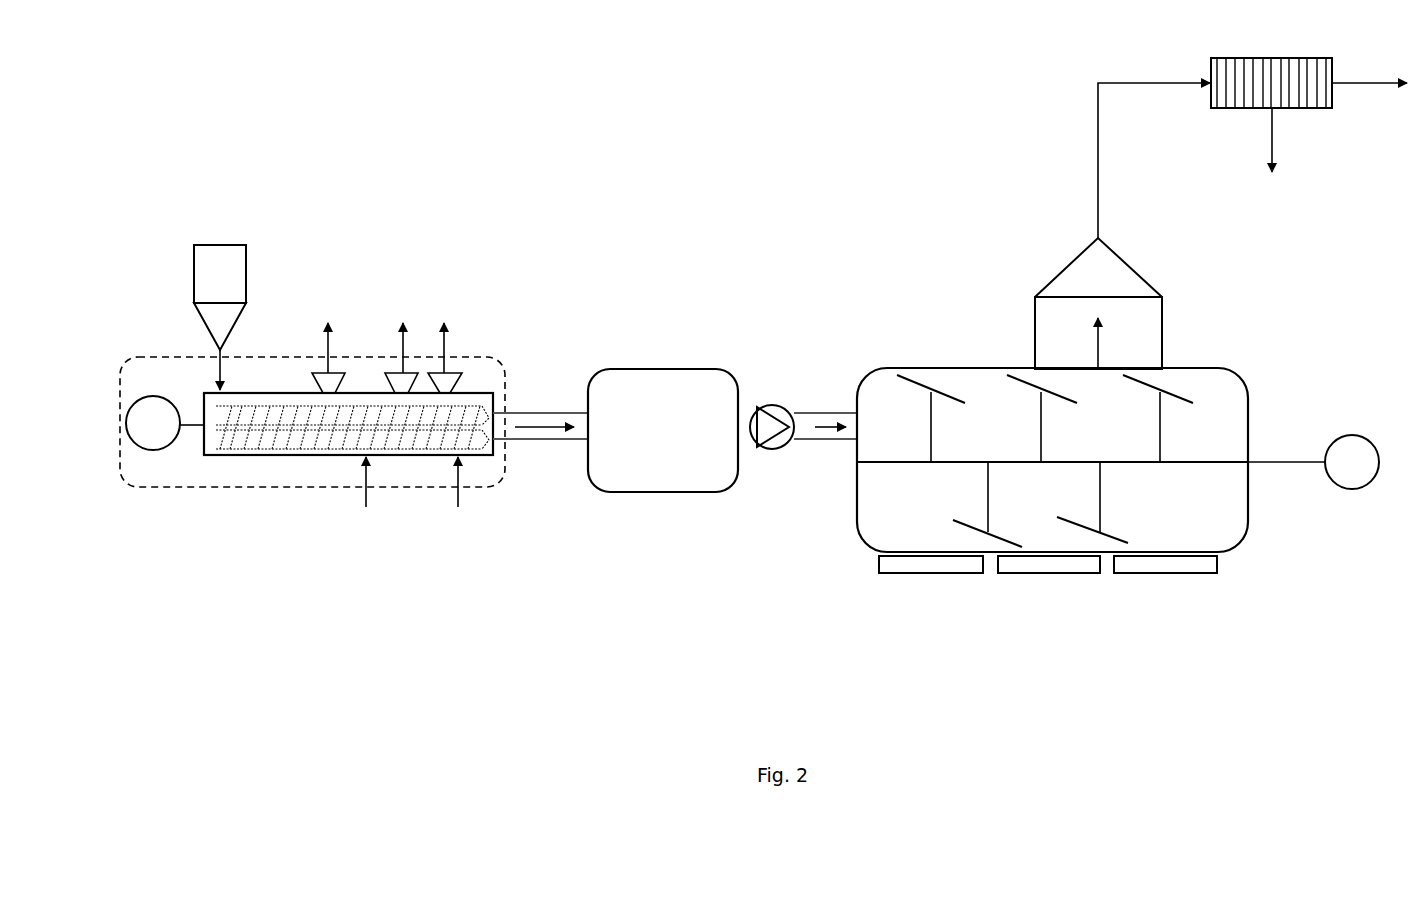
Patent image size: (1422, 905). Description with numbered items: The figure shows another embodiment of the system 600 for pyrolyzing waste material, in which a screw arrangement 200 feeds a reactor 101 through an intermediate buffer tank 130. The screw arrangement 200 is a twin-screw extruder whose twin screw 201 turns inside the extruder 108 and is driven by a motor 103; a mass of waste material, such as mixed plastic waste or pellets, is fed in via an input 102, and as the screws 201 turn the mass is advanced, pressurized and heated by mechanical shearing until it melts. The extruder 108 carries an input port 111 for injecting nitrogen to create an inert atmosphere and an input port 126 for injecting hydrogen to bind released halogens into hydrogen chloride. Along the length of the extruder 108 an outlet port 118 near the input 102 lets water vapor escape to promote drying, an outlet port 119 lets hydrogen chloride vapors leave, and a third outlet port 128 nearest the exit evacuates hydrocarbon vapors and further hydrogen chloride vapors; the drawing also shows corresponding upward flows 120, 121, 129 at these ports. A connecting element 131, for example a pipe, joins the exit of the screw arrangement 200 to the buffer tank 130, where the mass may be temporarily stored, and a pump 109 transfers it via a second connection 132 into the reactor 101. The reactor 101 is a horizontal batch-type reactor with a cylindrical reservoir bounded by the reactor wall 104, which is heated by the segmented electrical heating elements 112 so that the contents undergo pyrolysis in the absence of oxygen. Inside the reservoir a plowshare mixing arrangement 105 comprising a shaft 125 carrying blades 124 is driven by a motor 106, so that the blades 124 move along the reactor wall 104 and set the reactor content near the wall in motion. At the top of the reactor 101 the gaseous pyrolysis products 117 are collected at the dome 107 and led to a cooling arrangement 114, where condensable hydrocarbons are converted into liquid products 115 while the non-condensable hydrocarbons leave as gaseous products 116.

The system 600 is at (180, 123).
The screw arrangement 200 is at (120, 405).
The input 102 is at (224, 256).
The motor 103 is at (155, 450).
The extruder 108 is at (228, 457).
The twin screw 201 is at (275, 457).
The input port 126 is at (366, 492).
The input port 111 is at (456, 500).
The outlet port 118 is at (320, 382).
The first vent outlet 120 is at (326, 350).
The outlet port 119 is at (394, 378).
The second vent outlet 121 is at (404, 346).
The third outlet port 128 is at (457, 386).
The third vent outlet 129 is at (447, 352).
The connecting element 131 is at (553, 442).
The buffer tank 130 is at (684, 369).
The pump 109 is at (770, 404).
The second connection 132 is at (811, 442).
The reactor 101 is at (1250, 424).
The mixing arrangement 105 is at (1172, 449).
The reactor wall 104 is at (1189, 549).
The motor 106 is at (1350, 489).
The gas collection 107 is at (1050, 280).
The gaseous pyrolysis products 117 is at (1098, 157).
The cooling arrangement 114 is at (1220, 108).
The liquid products 115 is at (1275, 156).
The gaseous products 116 is at (1353, 84).
The shaft 125 is at (890, 462).
The heating elements 112 is at (923, 574).
The blades 124 is at (1097, 530).